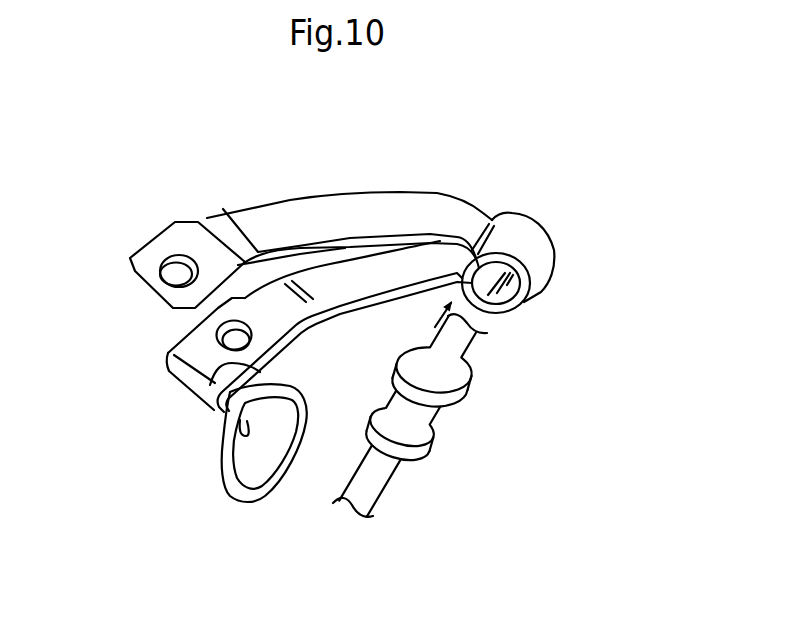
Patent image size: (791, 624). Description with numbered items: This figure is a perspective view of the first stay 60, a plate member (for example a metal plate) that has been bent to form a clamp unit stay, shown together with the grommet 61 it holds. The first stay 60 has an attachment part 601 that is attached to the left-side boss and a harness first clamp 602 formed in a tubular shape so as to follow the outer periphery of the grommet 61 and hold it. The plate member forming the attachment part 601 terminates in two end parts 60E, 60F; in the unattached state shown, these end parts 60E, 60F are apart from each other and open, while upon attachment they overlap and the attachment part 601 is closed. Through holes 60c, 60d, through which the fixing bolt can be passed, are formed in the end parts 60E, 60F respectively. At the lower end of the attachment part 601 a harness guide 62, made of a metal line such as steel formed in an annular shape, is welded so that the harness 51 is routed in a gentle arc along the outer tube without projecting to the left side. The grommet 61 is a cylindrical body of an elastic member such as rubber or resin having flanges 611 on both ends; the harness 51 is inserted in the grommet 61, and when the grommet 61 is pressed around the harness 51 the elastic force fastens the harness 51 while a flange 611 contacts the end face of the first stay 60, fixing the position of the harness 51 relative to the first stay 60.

The first stay 60 is at (340, 180).
The end part 60E is at (160, 233).
The through hole 60c is at (188, 264).
The harness first clamp 602 is at (537, 262).
The attachment part 601 is at (277, 334).
The through hole 60d is at (234, 342).
The end part 60F is at (258, 371).
The harness guide 62 is at (221, 473).
The grommet 61 is at (459, 406).
The flange 611 is at (470, 368).
The harness 51 is at (371, 488).